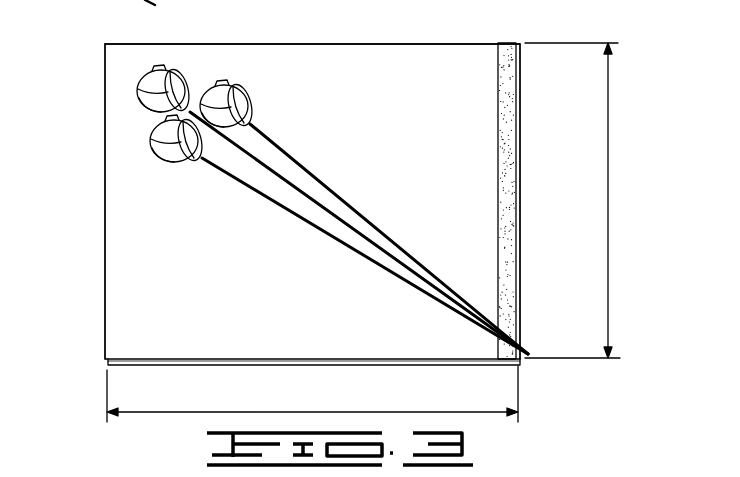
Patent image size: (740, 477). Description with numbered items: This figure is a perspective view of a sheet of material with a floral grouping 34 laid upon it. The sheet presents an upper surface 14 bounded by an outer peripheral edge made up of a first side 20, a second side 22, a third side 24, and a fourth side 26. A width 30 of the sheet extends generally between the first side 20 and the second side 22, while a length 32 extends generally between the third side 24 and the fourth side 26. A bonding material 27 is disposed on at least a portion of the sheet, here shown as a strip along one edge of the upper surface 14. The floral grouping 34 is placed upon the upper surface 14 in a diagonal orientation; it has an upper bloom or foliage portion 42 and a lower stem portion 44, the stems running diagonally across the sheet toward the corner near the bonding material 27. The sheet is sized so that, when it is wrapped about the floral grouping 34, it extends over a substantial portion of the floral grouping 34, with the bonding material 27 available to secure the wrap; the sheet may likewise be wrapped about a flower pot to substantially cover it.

The upper surface 14 is at (390, 68).
The first side 20 is at (228, 366).
The second side 22 is at (277, 43).
The third side 24 is at (105, 185).
The fourth side 26 is at (520, 229).
The bonding material 27 is at (510, 132).
The width 30 is at (608, 183).
The length 32 is at (300, 411).
The floral grouping 34 is at (289, 209).
The upper bloom or foliage portion 42 is at (142, 88).
The lower stem portion 44 is at (413, 293).